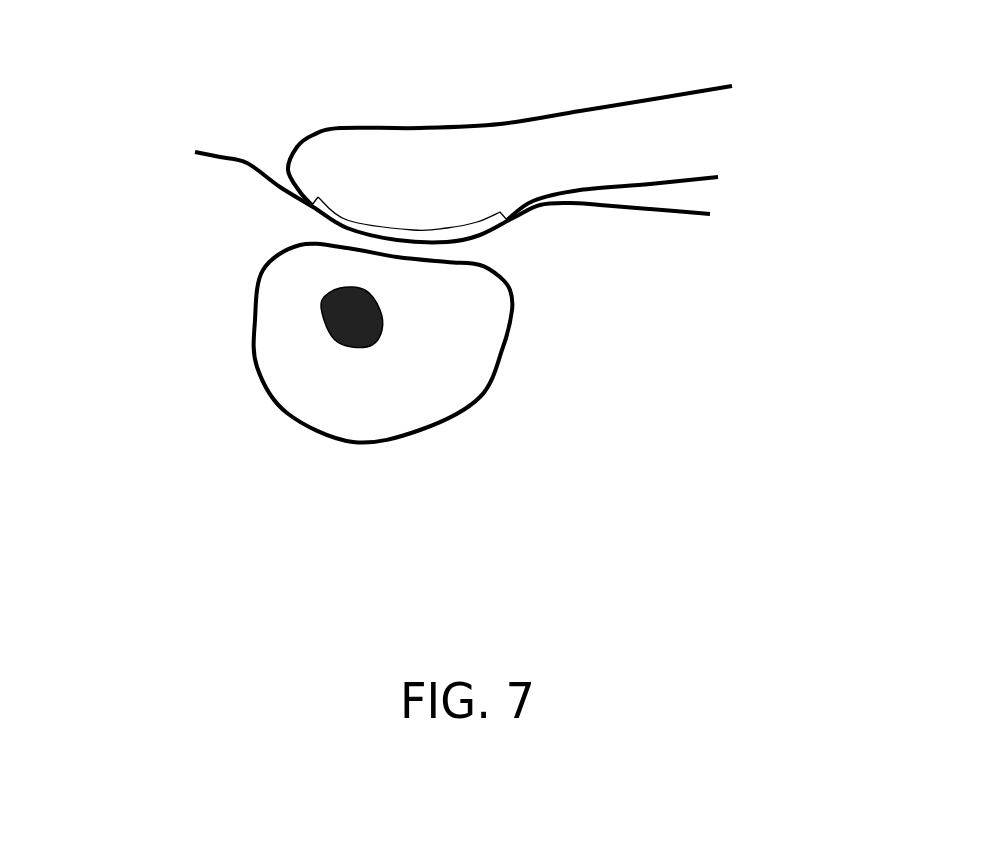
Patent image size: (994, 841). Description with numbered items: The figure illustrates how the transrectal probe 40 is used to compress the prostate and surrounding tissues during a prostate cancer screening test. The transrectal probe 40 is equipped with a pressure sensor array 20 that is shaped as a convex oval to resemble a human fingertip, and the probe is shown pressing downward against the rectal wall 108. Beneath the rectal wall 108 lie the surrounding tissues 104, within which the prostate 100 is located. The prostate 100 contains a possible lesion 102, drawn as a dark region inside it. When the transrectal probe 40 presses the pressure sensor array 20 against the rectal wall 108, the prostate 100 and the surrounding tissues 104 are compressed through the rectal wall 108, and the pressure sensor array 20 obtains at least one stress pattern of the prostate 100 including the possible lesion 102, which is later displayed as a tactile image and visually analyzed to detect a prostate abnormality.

The pressure sensor array 20 is at (390, 232).
The transrectal probe 40 is at (367, 150).
The prostate 100 is at (293, 297).
The lesion 102 is at (333, 342).
The surrounding tissues 104 is at (585, 365).
The rectal wall 108 is at (247, 163).